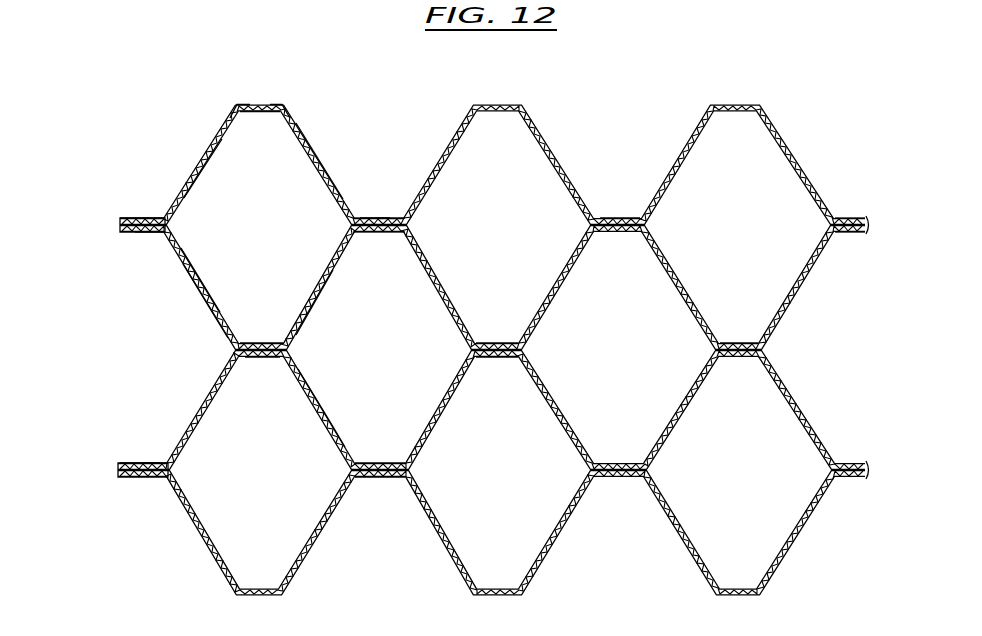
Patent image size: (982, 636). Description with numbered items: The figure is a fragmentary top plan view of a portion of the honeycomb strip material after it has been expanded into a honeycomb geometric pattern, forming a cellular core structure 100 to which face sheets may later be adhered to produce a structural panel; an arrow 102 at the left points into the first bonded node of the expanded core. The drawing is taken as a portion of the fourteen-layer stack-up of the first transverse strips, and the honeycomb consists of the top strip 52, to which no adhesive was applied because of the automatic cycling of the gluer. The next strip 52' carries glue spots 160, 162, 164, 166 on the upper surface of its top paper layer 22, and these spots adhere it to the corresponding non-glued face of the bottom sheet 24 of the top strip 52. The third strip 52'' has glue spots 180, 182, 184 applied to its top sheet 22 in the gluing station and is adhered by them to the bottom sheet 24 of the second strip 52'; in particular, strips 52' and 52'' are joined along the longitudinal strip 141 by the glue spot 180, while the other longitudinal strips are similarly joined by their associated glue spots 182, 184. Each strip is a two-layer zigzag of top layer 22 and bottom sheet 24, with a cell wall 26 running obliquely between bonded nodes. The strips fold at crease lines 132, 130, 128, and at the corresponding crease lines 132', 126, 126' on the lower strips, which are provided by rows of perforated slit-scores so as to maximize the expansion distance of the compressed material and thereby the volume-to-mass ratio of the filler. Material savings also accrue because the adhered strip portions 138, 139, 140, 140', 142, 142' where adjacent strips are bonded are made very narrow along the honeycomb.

The honeycomb core structure 100 is at (118, 468).
The direction of ribbon / loading arrow 102 is at (108, 225).
The top paper layer 22 is at (178, 252).
The bottom sheet 24 is at (190, 188).
The cell wall 26 is at (192, 276).
The first transverse strip 52 is at (322, 149).
The second strip 52' is at (344, 292).
The third strip 52'' is at (350, 414).
The node 126 is at (326, 203).
The node 126' is at (326, 233).
The crease line 128 is at (290, 113).
The crease line 130 is at (236, 116).
The crease line 132 is at (171, 177).
The flange 132' is at (121, 272).
The adhered strip portion 138 is at (848, 234).
The adhered strip portion 139 is at (502, 360).
The adhered strip portion 140 is at (391, 302).
The node 140' is at (379, 257).
The longitudinal strip 141 is at (262, 115).
The adhered strip portion 142 is at (106, 177).
The web 142' is at (156, 442).
The glue spot 160 is at (140, 218).
The glue spot 162 is at (372, 217).
The glue spot 164 is at (618, 217).
The glue spot 166 is at (852, 222).
The glue spot 180 is at (256, 342).
The glue spot 182 is at (496, 342).
The glue spot 184 is at (736, 342).